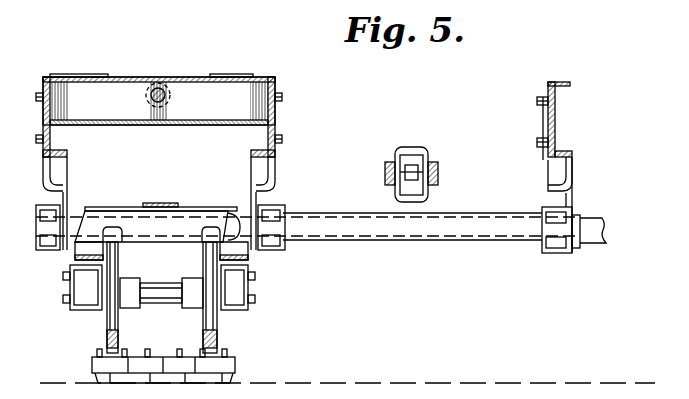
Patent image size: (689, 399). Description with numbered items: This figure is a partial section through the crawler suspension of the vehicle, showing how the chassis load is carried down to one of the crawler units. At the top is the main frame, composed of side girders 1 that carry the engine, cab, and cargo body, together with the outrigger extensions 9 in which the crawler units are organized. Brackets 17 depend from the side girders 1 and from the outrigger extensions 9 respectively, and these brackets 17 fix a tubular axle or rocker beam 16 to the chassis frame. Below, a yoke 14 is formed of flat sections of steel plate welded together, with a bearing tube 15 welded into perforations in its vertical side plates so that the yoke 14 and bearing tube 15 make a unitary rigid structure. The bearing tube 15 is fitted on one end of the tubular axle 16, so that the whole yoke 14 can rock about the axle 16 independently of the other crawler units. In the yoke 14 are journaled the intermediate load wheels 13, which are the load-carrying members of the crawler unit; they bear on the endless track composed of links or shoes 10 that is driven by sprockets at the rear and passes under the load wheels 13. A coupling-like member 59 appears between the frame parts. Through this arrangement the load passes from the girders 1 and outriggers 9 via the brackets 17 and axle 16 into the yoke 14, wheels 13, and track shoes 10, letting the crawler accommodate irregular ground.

The side girder 1 is at (272, 80).
The outrigger extension 9 is at (121, 76).
The link or shoe 10 is at (220, 365).
The intermediate load wheel 13 is at (205, 318).
The yoke 14 is at (115, 204).
The bearing tube 15 is at (190, 222).
The tubular axle or rocker beam 16 is at (250, 215).
The bracket 17 is at (57, 182).
The coupling 59 is at (435, 165).